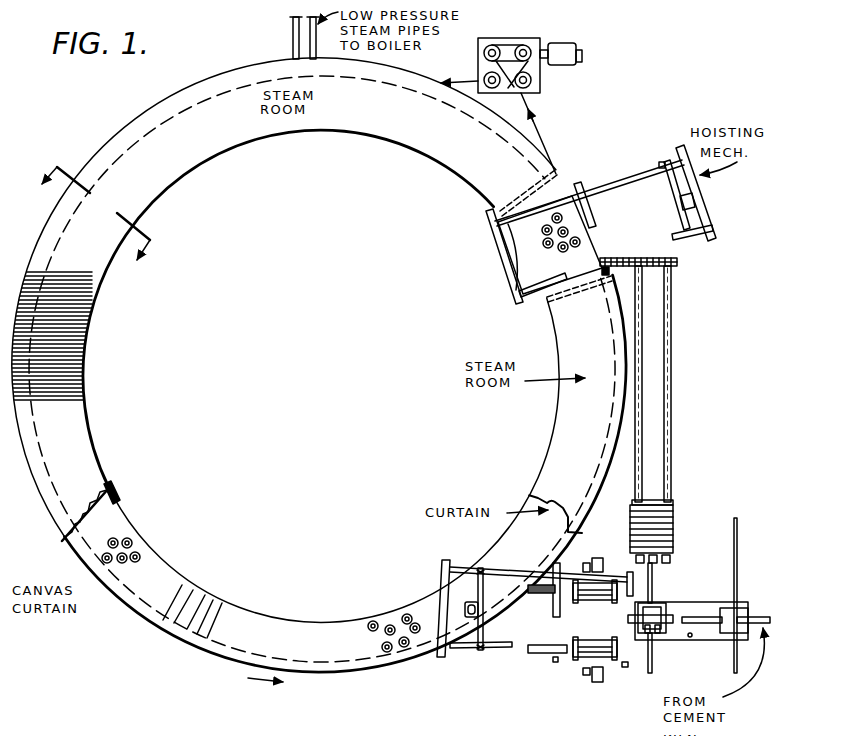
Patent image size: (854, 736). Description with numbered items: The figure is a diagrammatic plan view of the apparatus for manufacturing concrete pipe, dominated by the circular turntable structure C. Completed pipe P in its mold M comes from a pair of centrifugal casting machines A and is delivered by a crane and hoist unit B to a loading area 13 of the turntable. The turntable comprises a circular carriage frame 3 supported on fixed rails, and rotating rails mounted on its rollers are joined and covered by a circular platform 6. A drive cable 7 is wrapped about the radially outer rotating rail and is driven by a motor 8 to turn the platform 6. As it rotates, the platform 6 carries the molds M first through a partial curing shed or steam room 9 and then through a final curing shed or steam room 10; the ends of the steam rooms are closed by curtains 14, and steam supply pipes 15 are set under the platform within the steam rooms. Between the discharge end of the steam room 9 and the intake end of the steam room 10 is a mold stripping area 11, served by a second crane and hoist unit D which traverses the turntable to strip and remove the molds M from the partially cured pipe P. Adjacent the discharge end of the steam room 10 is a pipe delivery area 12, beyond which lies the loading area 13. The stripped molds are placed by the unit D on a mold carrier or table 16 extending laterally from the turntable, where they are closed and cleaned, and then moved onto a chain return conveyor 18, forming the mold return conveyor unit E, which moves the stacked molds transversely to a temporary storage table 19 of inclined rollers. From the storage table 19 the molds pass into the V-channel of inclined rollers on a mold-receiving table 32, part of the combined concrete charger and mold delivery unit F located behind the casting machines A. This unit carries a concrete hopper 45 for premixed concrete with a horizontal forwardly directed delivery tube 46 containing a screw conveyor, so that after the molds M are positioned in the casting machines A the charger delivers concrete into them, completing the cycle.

The circular carriage frame 3 is at (83, 230).
The circular platform 6 is at (203, 588).
The drive cable 7 is at (538, 128).
The motor 8 is at (533, 80).
The partial curing shed or steam room 9 is at (572, 410).
The final curing shed or steam room 10 is at (168, 165).
The mold stripping area 11 is at (544, 243).
The pipe delivery area 12 is at (143, 583).
The loading area 13 is at (467, 592).
The curtains 14 is at (522, 193).
The steam supply pipes 15 is at (292, 27).
The mold carrier or table 16 is at (630, 258).
The return conveyor 18 is at (674, 350).
The temporary storage table 19 is at (672, 500).
The mold-receiving table 32 is at (673, 637).
The concrete hopper 45 is at (735, 613).
The delivery tube 46 is at (708, 623).
The centrifugal casting machines A is at (602, 598).
The crane and hoist unit B is at (483, 625).
The turntable structure C is at (505, 542).
The second crane and hoist unit D is at (600, 208).
The mold return conveyor unit E is at (675, 410).
The combined concrete charger and mold delivery unit F is at (693, 602).
The molds M is at (580, 243).
The concrete pipe P is at (138, 555).